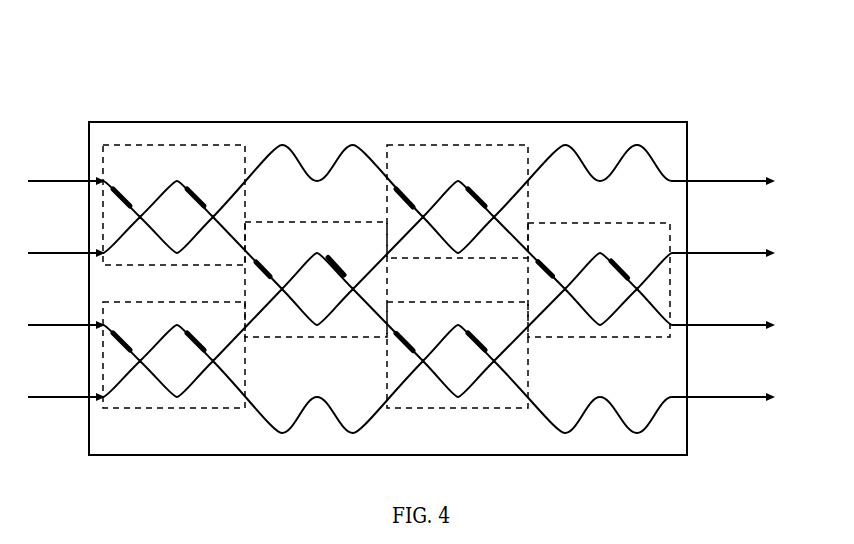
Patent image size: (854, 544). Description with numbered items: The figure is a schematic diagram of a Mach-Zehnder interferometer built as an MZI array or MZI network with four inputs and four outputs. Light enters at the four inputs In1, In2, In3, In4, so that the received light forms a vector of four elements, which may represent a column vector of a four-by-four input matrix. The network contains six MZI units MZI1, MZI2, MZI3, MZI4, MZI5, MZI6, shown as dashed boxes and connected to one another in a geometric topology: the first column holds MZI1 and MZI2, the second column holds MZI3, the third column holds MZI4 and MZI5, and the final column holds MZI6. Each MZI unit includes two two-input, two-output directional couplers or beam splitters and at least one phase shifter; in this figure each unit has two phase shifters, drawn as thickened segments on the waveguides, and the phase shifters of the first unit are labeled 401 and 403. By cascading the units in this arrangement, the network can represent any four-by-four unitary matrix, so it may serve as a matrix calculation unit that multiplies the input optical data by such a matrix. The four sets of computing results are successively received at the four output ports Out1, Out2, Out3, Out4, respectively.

The phase shifter on MZI input arm 401 is at (135, 213).
The phase shifter on MZI interferometer arm 403 is at (198, 208).
The MZI unit MZI1 is at (174, 205).
The MZI unit MZI2 is at (174, 355).
The MZI unit MZI3 is at (316, 279).
The MZI unit MZI4 is at (457, 201).
The MZI unit MZI5 is at (457, 355).
The MZI unit MZI6 is at (599, 280).
The input In1 is at (66, 168).
The input In2 is at (66, 239).
The input In3 is at (66, 311).
The input In4 is at (66, 383).
The output port Out1 is at (723, 167).
The output port Out2 is at (723, 239).
The output port Out3 is at (723, 311).
The output port Out4 is at (723, 383).